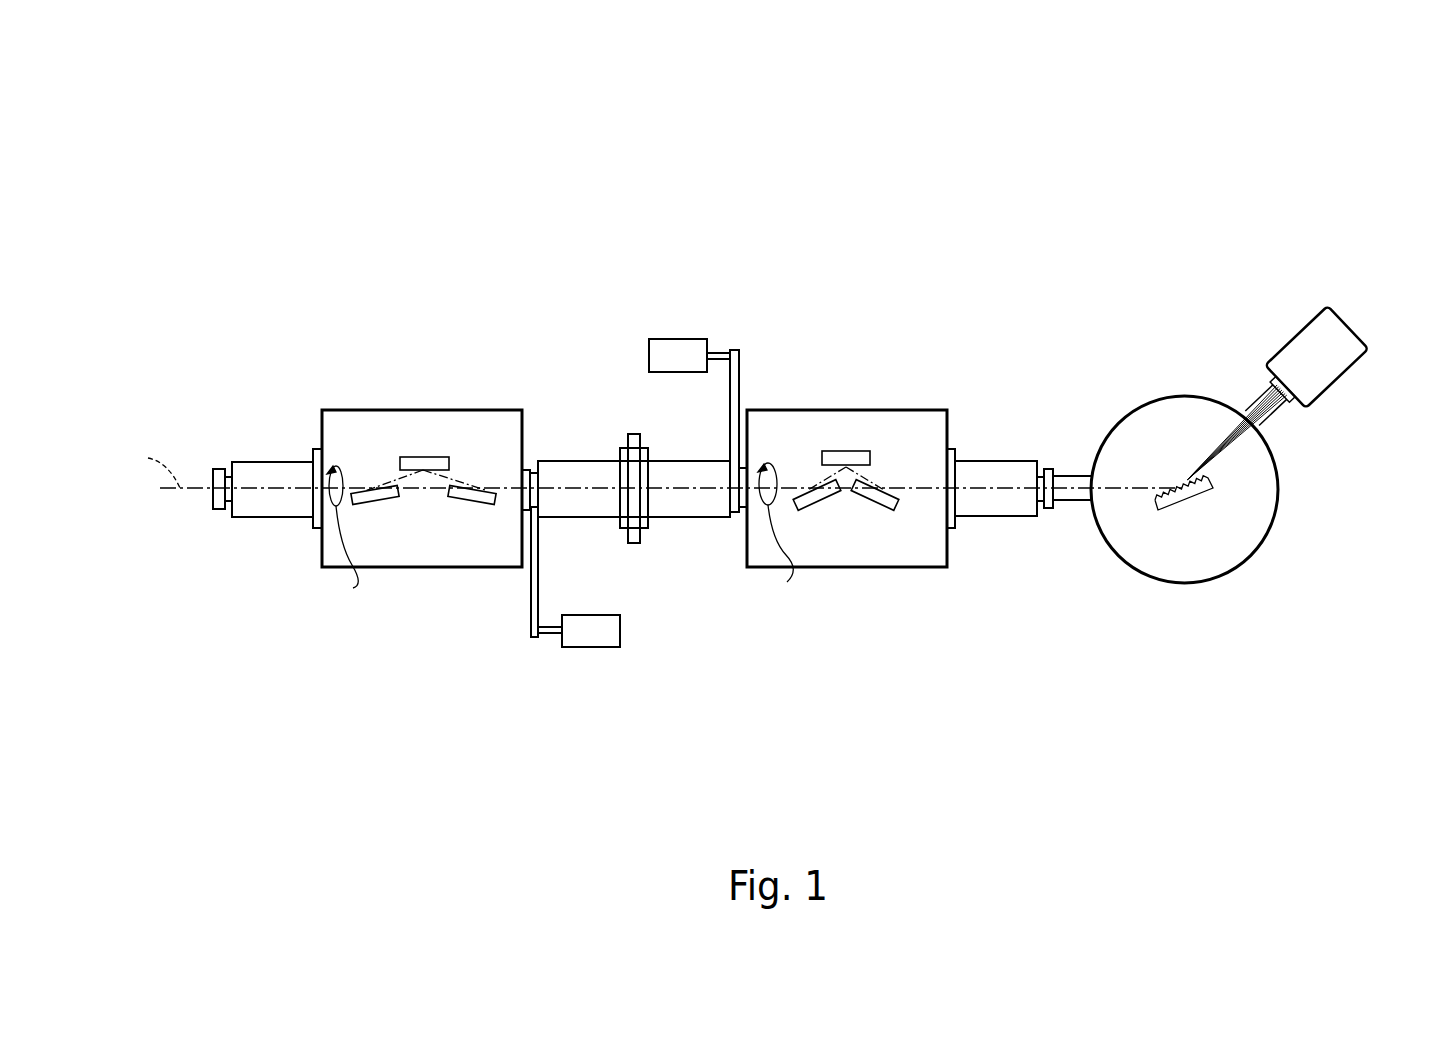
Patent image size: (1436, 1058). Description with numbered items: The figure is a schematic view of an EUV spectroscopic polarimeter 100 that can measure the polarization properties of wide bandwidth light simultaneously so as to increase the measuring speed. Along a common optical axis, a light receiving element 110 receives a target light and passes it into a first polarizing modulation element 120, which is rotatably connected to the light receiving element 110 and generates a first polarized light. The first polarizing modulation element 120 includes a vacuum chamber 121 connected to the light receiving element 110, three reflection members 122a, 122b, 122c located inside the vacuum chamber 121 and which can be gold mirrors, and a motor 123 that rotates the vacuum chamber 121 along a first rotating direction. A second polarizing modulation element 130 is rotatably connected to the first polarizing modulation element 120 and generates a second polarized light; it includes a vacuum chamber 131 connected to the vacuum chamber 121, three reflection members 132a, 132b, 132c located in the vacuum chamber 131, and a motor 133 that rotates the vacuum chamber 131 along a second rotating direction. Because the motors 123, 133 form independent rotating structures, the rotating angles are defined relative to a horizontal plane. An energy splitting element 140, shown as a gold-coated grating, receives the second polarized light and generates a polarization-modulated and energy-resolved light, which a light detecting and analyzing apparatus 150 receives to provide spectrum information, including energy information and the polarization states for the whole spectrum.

The EUV spectroscopic polarimeter 100 is at (155, 64).
The light receiving element 110 is at (213, 477).
The first polarizing modulation element 120 is at (356, 295).
The vacuum chamber 121 is at (467, 410).
The reflection member 122a is at (367, 487).
The reflection member 122b is at (423, 457).
The reflection member 122c is at (490, 487).
The motor 123 is at (592, 637).
The second polarizing modulation element 130 is at (930, 292).
The vacuum chamber 131 is at (882, 568).
The reflection member 132a is at (808, 488).
The reflection member 132b is at (855, 451).
The reflection member 132c is at (884, 488).
The motor 133 is at (682, 345).
The energy splitting element 140 is at (1187, 497).
The light detecting and analyzing apparatus 150 is at (1345, 332).